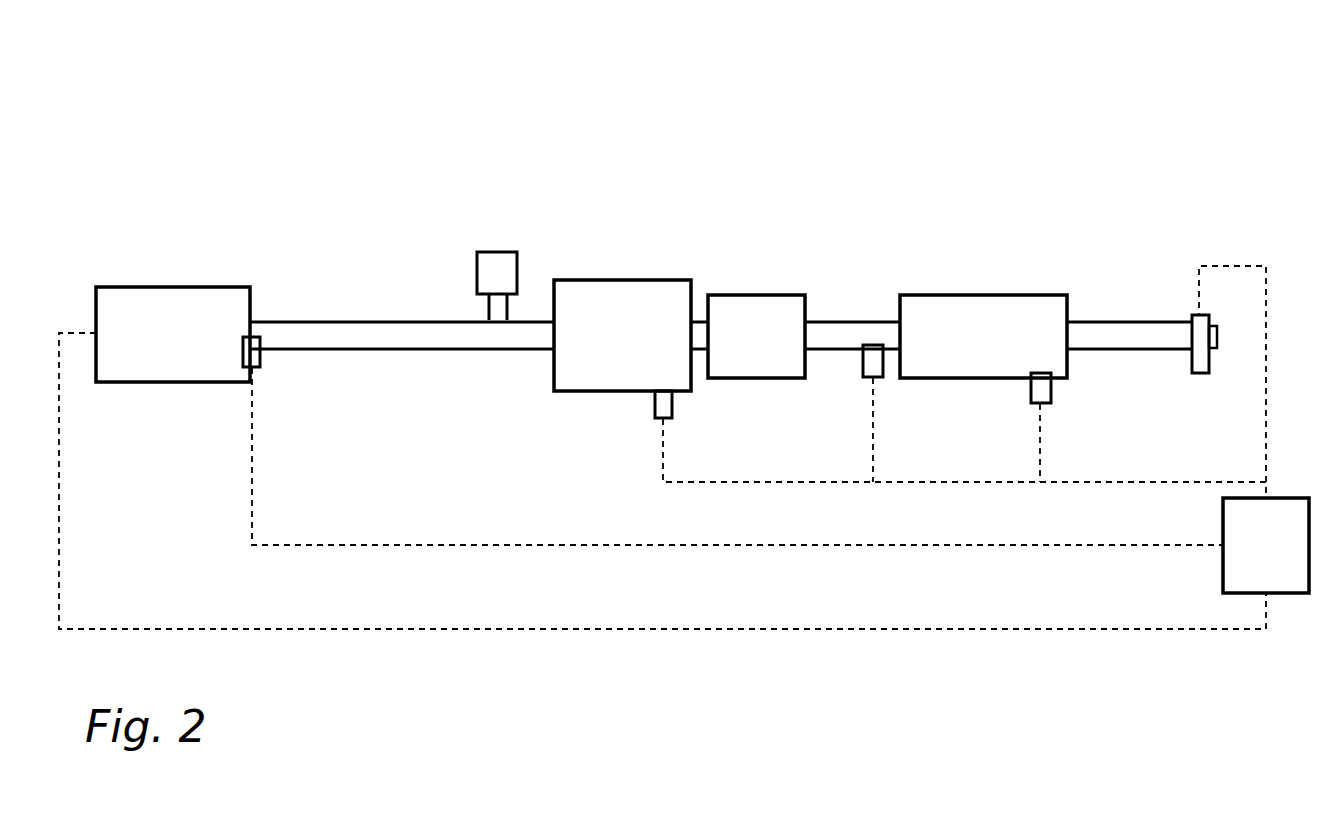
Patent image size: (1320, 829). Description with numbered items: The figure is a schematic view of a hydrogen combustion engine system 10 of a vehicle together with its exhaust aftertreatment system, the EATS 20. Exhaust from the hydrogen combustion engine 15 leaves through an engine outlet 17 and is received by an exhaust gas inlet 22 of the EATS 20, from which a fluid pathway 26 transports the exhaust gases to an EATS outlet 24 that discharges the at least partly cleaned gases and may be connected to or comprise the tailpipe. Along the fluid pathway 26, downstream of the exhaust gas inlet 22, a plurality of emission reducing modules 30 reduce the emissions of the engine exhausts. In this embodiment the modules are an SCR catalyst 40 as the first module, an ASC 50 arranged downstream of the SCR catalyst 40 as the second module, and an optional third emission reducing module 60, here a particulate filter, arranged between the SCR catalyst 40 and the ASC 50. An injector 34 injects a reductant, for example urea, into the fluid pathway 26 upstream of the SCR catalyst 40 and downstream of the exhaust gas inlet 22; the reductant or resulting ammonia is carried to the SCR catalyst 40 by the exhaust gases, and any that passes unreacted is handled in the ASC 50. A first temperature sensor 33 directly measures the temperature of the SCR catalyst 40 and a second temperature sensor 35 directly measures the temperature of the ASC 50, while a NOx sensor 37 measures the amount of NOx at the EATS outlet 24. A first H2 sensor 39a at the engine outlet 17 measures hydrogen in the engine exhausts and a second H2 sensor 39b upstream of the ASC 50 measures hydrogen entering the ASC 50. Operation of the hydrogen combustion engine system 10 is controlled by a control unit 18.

The hydrogen combustion engine system 10 is at (1115, 151).
The hydrogen combustion engine 15 is at (192, 287).
The engine outlet 17 is at (270, 372).
The control unit 18 is at (1290, 593).
The EATS 20 is at (816, 236).
The exhaust gas inlet 22 is at (253, 322).
The EATS outlet 24 is at (1217, 323).
The fluid pathway 26 is at (398, 276).
The emission reducing modules 30 is at (544, 440).
The first temperature sensor 33 is at (656, 417).
The injector 34 is at (508, 320).
The second temperature sensor 35 is at (1031, 400).
The NOx sensor 37 is at (1199, 374).
The first H2 sensor 39a is at (243, 364).
The second H2 sensor 39b is at (864, 373).
The SCR catalyst 40 is at (584, 391).
The ASC 50 is at (961, 378).
The third emission reducing module 60 is at (741, 378).